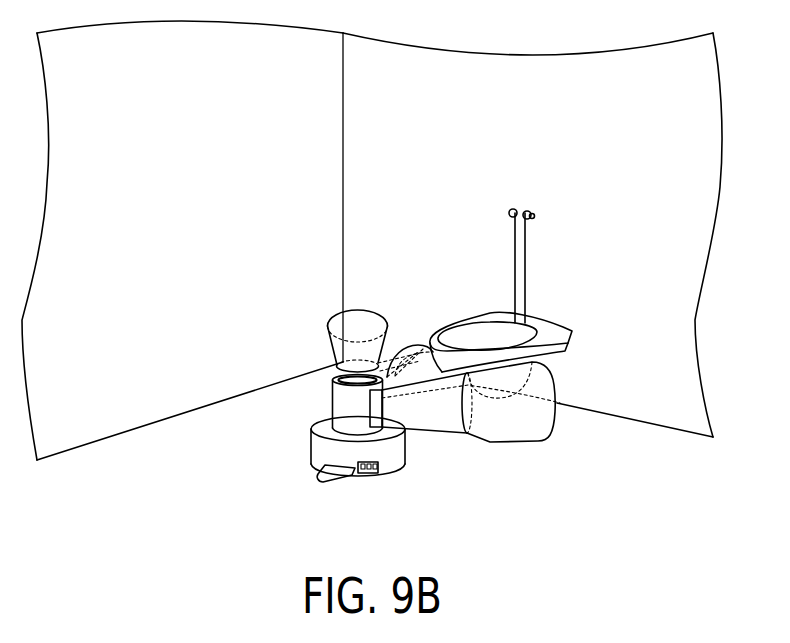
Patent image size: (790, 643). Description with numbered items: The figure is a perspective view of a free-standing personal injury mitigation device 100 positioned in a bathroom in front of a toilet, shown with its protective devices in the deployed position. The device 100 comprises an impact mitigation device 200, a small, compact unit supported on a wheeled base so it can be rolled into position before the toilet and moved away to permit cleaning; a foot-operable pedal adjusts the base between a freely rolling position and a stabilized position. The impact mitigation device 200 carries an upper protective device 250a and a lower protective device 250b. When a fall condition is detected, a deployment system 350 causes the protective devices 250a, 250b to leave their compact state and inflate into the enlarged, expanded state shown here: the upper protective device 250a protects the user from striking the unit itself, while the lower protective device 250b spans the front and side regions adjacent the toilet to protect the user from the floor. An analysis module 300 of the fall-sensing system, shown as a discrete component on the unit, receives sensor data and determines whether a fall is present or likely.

The personal injury mitigation device 100 is at (258, 413).
The impact mitigation device 200 is at (313, 450).
The upper protective device 250a is at (363, 325).
The lower protective device 250b is at (515, 430).
The analysis module 300 is at (366, 475).
The deployment system 350 is at (375, 473).